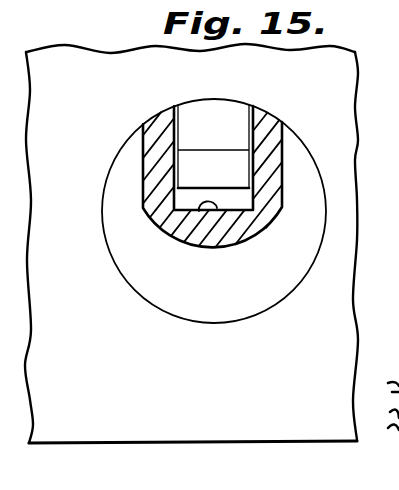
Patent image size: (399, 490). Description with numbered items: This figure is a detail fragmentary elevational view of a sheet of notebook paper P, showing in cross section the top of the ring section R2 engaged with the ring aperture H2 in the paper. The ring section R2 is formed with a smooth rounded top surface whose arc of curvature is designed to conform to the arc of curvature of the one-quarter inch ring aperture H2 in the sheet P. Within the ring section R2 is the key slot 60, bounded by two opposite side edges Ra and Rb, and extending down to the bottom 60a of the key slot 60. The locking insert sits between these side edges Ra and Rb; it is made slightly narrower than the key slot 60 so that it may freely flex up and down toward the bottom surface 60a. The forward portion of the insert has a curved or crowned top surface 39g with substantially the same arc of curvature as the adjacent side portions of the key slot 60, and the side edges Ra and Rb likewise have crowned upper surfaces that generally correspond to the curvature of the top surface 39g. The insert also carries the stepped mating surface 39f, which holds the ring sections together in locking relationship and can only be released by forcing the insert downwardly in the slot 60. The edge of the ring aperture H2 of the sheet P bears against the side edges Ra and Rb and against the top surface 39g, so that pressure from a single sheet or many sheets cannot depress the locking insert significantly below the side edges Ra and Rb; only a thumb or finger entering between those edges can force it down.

The page of notebook paper P is at (345, 93).
The ring aperture H2 is at (297, 262).
The ring section R2 is at (237, 165).
The side edge of key slot Ra is at (262, 117).
The side edge of key slot Rb is at (158, 108).
The crowned top surface 39g is at (199, 105).
The mating surface 39f is at (232, 178).
The key slot 60 is at (190, 199).
The bottom of key slot 60a is at (198, 247).